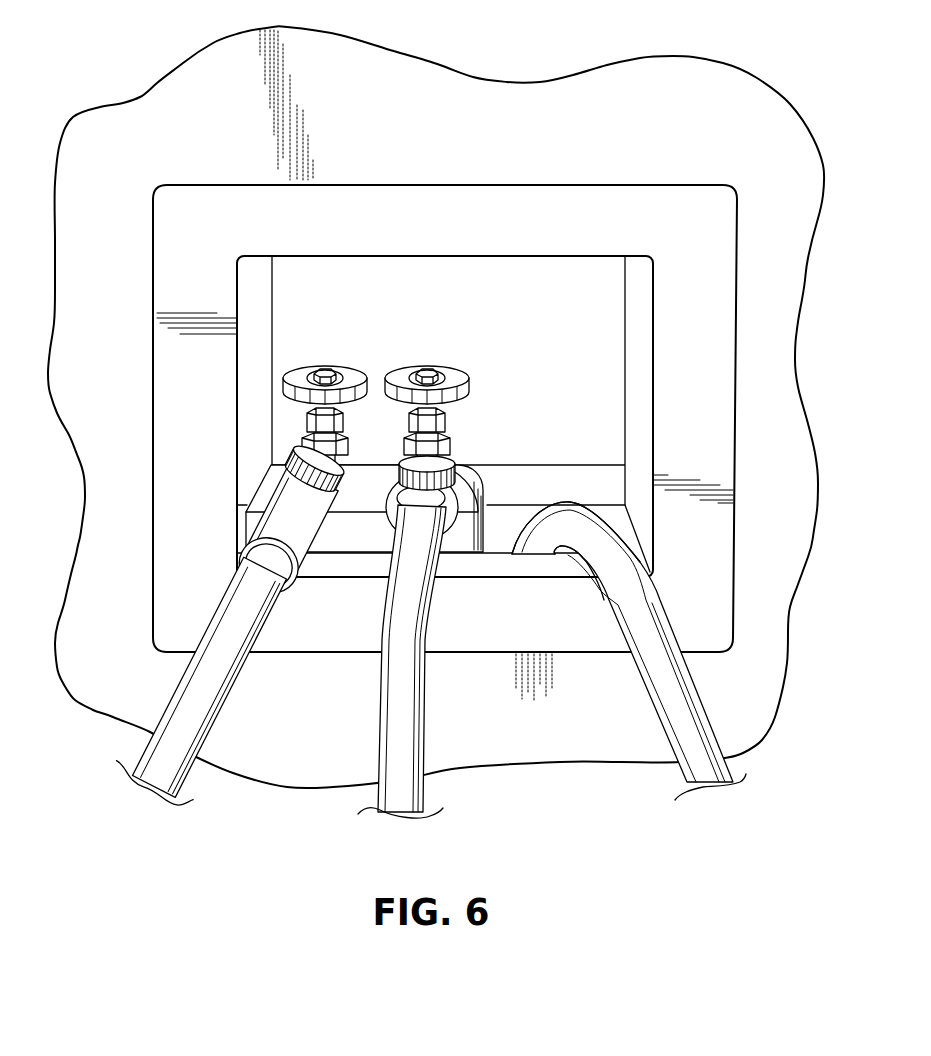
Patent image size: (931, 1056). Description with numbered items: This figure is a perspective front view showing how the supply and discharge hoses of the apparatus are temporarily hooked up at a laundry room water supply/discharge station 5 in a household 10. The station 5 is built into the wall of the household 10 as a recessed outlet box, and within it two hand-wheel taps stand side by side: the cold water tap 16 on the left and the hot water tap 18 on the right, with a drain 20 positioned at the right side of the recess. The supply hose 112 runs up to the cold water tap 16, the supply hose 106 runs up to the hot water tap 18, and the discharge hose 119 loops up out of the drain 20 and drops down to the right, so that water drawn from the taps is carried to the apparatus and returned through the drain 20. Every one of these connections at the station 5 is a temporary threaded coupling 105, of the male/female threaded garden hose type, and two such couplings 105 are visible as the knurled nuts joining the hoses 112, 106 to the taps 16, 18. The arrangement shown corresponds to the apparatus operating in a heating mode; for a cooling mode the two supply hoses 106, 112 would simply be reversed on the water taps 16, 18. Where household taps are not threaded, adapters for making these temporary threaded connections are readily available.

The household 10 is at (473, 122).
The outlet box 5 is at (612, 205).
The cold water tap 16 is at (302, 372).
The hot water tap 18 is at (448, 372).
The temporary threaded coupling 105 is at (297, 458).
The drain 20 is at (510, 540).
The supply hose 112 is at (176, 712).
The supply hose 106 is at (397, 737).
The discharge hose 119 is at (616, 619).